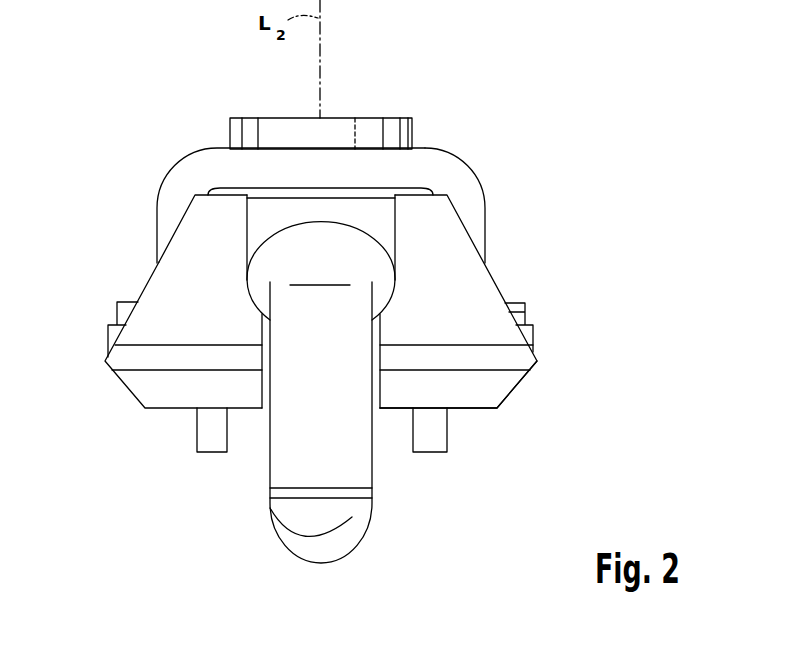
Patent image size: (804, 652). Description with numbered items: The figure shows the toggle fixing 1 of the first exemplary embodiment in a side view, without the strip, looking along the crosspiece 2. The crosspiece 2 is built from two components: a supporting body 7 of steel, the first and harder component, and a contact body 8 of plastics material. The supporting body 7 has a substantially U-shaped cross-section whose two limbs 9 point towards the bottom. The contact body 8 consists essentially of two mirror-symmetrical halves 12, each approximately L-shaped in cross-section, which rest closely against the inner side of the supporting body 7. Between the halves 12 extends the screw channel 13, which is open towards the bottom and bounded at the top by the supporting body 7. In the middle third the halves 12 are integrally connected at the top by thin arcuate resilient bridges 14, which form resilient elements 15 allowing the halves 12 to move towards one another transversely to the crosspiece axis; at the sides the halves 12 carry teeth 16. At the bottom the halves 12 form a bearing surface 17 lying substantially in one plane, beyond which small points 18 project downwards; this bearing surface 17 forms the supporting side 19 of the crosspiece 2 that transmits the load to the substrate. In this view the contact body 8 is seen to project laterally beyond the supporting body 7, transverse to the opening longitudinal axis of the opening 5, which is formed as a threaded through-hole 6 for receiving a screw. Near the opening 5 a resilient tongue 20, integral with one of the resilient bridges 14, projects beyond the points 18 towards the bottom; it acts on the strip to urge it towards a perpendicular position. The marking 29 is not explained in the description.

The toggle fixing 1 is at (521, 127).
The crosspiece 2 is at (476, 170).
The opening 5 is at (348, 115).
The threaded through-hole 6 is at (368, 132).
The supporting body 7 is at (472, 205).
The contact body 8 is at (483, 290).
The limbs 9 is at (162, 230).
The halves 12 is at (162, 301).
The screw channel 13 is at (368, 265).
The resilient bridges 14 is at (373, 220).
The resilient elements 15 is at (250, 195).
The teeth 16 is at (517, 312).
The bearing surface 17 is at (465, 409).
The points 18 is at (205, 437).
The supporting side 19 is at (485, 409).
The resilient tongue 20 is at (352, 517).
The marking 29 is at (320, 273).